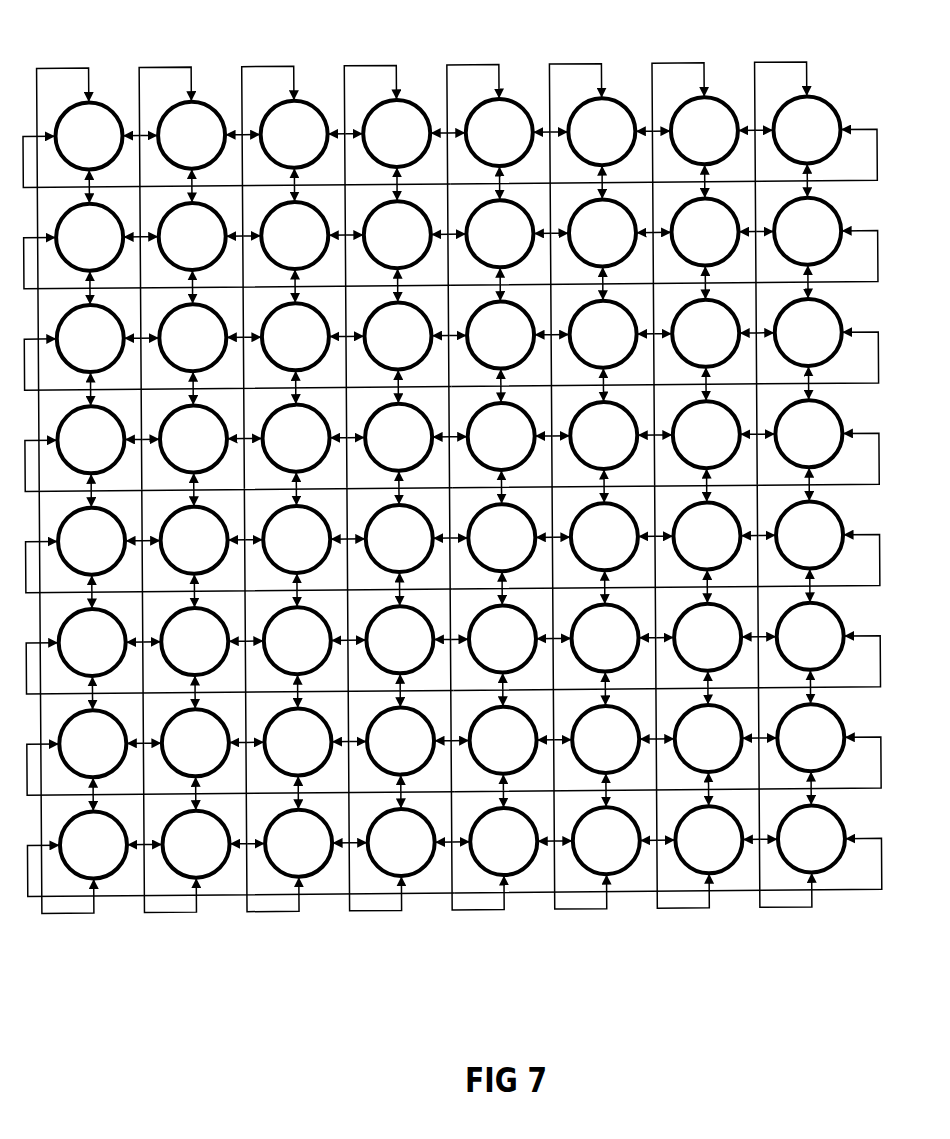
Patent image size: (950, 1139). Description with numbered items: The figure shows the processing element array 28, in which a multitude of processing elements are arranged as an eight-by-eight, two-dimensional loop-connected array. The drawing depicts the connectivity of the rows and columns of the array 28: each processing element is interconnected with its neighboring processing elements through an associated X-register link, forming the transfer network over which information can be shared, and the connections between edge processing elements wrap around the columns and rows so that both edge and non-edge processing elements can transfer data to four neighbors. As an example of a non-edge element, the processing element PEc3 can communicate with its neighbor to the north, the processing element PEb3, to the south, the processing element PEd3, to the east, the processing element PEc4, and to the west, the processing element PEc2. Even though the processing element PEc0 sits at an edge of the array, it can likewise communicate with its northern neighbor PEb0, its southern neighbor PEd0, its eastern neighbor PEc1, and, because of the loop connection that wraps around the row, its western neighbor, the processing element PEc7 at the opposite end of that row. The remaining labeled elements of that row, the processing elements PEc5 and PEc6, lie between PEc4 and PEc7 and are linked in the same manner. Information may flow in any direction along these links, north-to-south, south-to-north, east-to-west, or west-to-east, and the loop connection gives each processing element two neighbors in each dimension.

The processing element array 28 is at (819, 24).
The processing element b0 PEb0 is at (89, 238).
The processing element b3 PEb3 is at (397, 235).
The processing element c0 PEc0 is at (90, 339).
The processing element c1 PEc1 is at (192, 338).
The processing element c2 PEc2 is at (295, 337).
The processing element c3 PEc3 is at (397, 336).
The processing element c4 PEc4 is at (500, 335).
The processing element c5 PEc5 is at (602, 334).
The processing element c6 PEc6 is at (705, 334).
The processing element c7 PEc7 is at (808, 333).
The processing element d0 PEd0 is at (90, 440).
The processing element d3 PEd3 is at (398, 437).